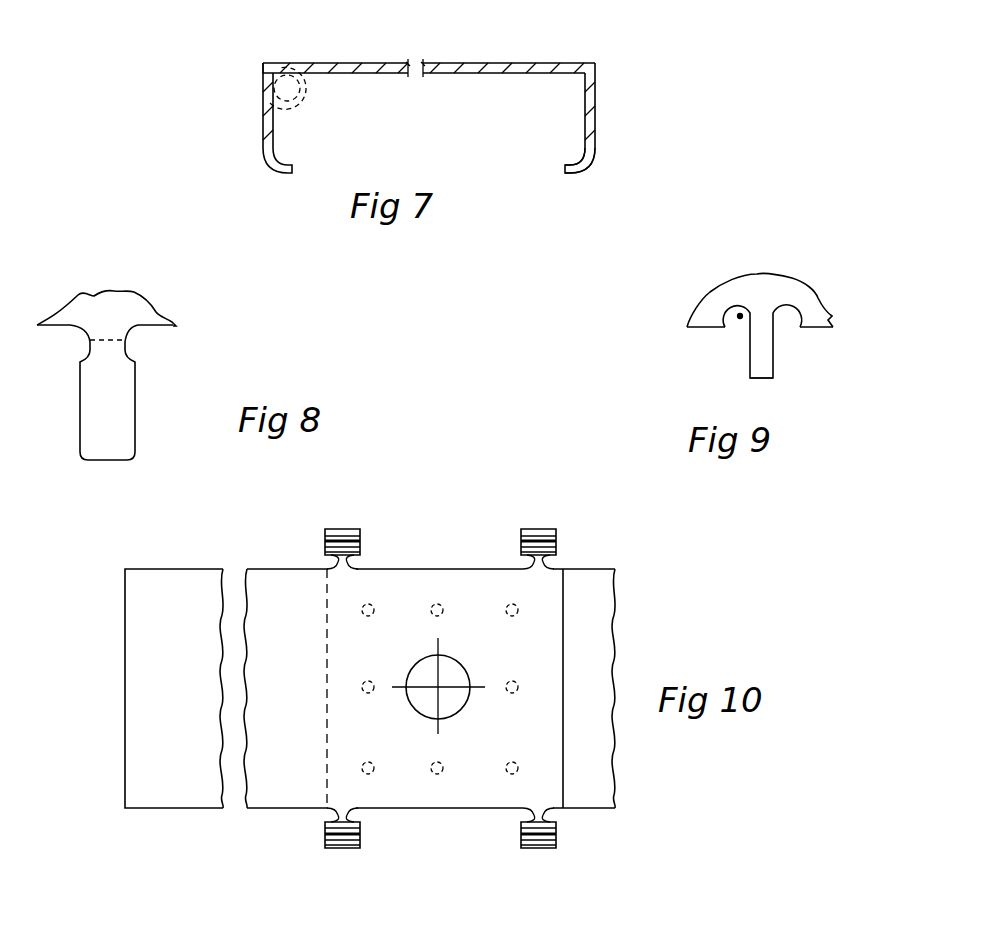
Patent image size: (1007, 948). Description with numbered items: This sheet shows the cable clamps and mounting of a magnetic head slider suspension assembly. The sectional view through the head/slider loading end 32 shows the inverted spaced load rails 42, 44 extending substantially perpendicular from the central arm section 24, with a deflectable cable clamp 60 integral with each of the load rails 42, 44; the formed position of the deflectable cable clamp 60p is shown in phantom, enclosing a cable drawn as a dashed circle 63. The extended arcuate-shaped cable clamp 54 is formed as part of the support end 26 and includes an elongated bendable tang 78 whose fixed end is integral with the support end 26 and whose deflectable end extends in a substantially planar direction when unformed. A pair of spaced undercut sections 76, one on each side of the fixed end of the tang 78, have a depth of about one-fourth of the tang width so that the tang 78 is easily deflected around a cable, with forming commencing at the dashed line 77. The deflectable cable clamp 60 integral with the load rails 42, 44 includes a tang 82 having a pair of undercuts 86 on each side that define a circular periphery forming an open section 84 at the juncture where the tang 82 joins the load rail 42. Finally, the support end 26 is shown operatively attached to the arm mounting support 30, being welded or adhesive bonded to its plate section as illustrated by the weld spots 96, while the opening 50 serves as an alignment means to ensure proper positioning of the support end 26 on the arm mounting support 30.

In FIG. 10, the central arm section 24 is at (597, 578).
In FIG. 8, the support end 26 is at (150, 309).
In FIG. 10, the support end 26 is at (482, 810).
In FIG. 10, the arm mounting support 30 is at (167, 578).
In FIG. 7, the head/slider loading end 32 is at (565, 63).
In FIG. 7, the load rail 42 is at (597, 112).
In FIG. 9, the load rail 42 is at (806, 297).
In FIG. 7, the load rail 44 is at (263, 107).
In FIG. 10, the opening 50 is at (452, 657).
In FIG. 8, the extended arcuate-shaped cable clamp 54 is at (125, 444).
In FIG. 10, the extended arcuate-shaped cable clamp 54 is at (358, 540).
In FIG. 7, the deflectable cable clamp 60 is at (590, 160).
In FIG. 9, the deflectable cable clamp 60 is at (776, 376).
In FIG. 7, the formed position of deflectable cable clamp 60p is at (300, 106).
In FIG. 7, the cable 63 is at (268, 72).
In FIG. 8, the undercut sections 76 is at (130, 336).
In FIG. 8, the dashed line 77 is at (105, 338).
In FIG. 8, the elongated bendable tang 78 is at (122, 398).
In FIG. 9, the tang 82 is at (765, 352).
In FIG. 9, the open section 84 is at (738, 320).
In FIG. 9, the undercuts 86 is at (725, 303).
In FIG. 10, the weld spots 96 is at (518, 605).